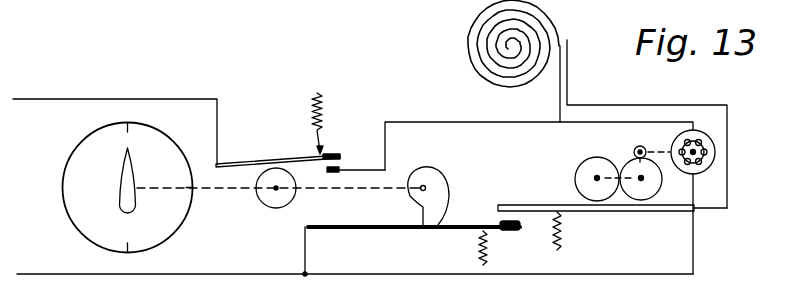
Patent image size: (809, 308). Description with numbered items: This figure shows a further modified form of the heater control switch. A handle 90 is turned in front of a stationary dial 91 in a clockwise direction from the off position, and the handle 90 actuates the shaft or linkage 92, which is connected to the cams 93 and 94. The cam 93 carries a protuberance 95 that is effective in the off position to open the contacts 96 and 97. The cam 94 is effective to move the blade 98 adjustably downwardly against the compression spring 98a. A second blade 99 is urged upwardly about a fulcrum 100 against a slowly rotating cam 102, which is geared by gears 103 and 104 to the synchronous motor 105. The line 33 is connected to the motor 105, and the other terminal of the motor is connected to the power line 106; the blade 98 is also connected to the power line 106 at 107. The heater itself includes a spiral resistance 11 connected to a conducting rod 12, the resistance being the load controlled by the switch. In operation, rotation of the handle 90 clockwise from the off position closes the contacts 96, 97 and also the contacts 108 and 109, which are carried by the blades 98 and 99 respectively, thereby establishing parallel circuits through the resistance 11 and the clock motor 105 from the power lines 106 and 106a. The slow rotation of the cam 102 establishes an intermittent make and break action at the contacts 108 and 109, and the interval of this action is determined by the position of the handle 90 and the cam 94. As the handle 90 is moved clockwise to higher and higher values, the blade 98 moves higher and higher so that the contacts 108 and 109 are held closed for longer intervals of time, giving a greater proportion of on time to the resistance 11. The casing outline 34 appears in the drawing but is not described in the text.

The spiral resistance 11 is at (558, 98).
The conducting rod 12 is at (570, 67).
The line 33 is at (457, 121).
The casing 34 is at (677, 99).
The handle 90 is at (126, 168).
The stationary dial 91 is at (72, 163).
The shaft or linkage 92 is at (216, 191).
The cam 93 is at (276, 202).
The cam 94 is at (431, 178).
The protuberance 95 is at (270, 165).
The contact 96 is at (340, 157).
The contact 97 is at (335, 173).
The blade 98 is at (437, 230).
The compression spring 98a is at (484, 266).
The blade 99 is at (580, 204).
The fulcrum 100 is at (677, 211).
The slowly rotating cam 102 is at (580, 164).
The gear 103 is at (646, 187).
The gear 104 is at (636, 150).
The synchronous motor 105 is at (713, 143).
The power line 106 is at (108, 276).
The power line 106a is at (82, 98).
The connection point 107 is at (312, 250).
The contact 108 is at (512, 229).
The contact 109 is at (500, 213).